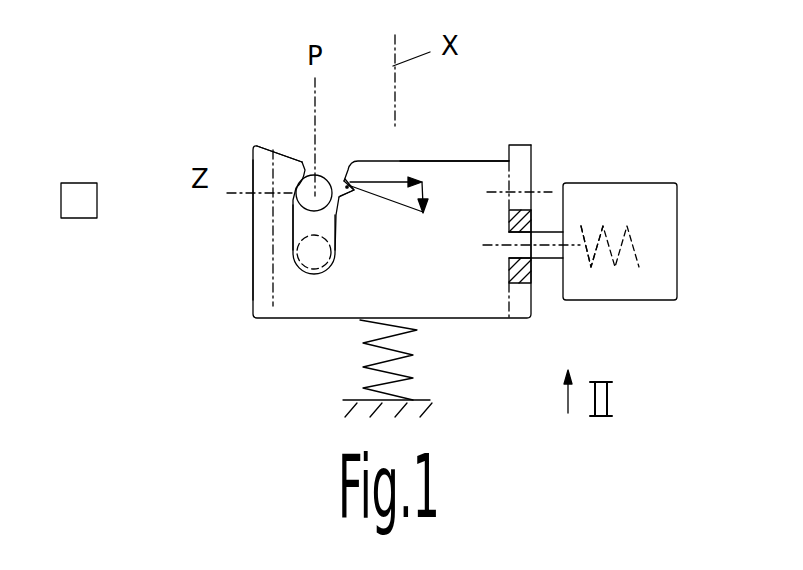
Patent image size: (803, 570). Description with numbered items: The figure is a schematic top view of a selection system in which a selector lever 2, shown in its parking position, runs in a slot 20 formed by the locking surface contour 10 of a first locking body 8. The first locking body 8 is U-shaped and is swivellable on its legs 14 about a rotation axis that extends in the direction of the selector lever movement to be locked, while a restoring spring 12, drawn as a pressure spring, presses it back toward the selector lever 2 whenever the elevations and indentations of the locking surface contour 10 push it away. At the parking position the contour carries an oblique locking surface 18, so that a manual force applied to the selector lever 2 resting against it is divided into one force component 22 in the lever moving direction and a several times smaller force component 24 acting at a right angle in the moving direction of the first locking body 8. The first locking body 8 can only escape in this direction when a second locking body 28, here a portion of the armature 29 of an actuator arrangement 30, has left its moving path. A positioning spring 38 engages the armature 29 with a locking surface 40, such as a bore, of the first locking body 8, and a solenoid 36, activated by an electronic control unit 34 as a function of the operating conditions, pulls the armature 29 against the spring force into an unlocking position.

The selector lever 2 is at (313, 175).
The first locking body 8 is at (281, 309).
The locking surface contour 10 is at (280, 157).
The restoring spring 12 is at (367, 347).
The legs 14 is at (252, 233).
The oblique locking surface 18 is at (344, 178).
The slot 20 is at (299, 222).
The force component 22 is at (381, 181).
The force component 24 is at (426, 190).
The second locking body 28 is at (538, 260).
The armature 29 is at (552, 260).
The actuator arrangement 30 is at (657, 184).
The electronic control unit 34 is at (74, 212).
The solenoid 36 is at (613, 210).
The positioning spring 38 is at (582, 227).
The locking surface 40 is at (531, 262).